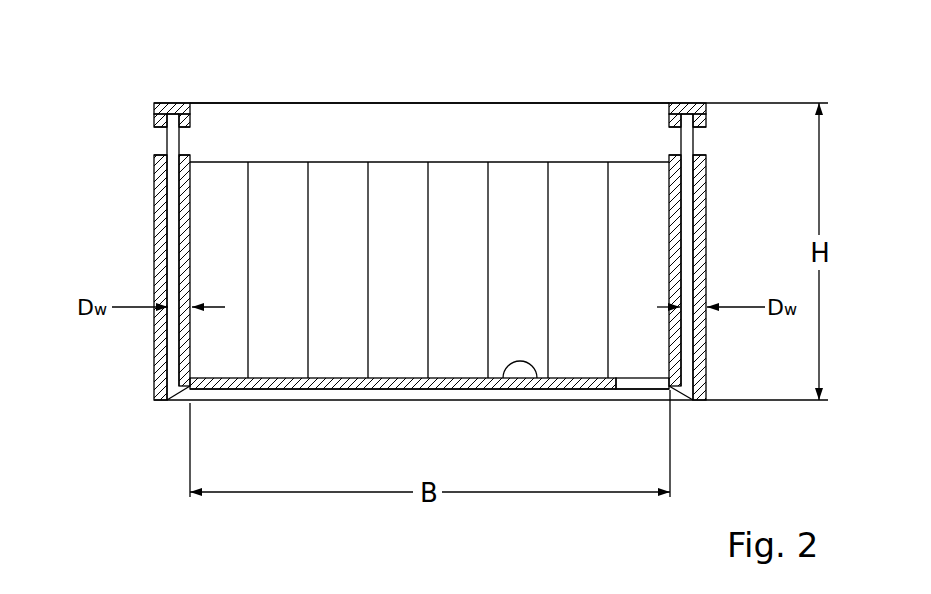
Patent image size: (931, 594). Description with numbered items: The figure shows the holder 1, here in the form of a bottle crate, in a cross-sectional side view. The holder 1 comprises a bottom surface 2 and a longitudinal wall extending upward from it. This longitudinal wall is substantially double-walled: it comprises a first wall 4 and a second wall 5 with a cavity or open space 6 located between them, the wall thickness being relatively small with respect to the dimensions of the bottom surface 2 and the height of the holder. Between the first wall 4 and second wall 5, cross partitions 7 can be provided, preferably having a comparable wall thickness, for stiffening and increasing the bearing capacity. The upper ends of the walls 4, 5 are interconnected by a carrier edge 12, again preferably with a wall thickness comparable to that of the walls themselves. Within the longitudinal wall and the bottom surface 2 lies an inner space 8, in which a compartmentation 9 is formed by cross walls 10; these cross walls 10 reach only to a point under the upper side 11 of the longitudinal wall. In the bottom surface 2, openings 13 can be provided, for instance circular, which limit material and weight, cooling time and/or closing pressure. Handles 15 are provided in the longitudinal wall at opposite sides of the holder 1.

The holder 1 is at (98, 157).
The bottom surface 2 is at (536, 392).
The first wall 4 is at (183, 187).
The second wall 5 is at (158, 223).
The cavity or open space 6 is at (172, 262).
The cross partitions 7 is at (688, 200).
The inner space 8 is at (400, 123).
The compartmentation 9 is at (339, 142).
The cross walls 10 is at (308, 162).
The upper side 11 is at (186, 92).
The carrier edge 12 is at (162, 112).
The openings 13 is at (638, 383).
The handles 15 is at (712, 143).